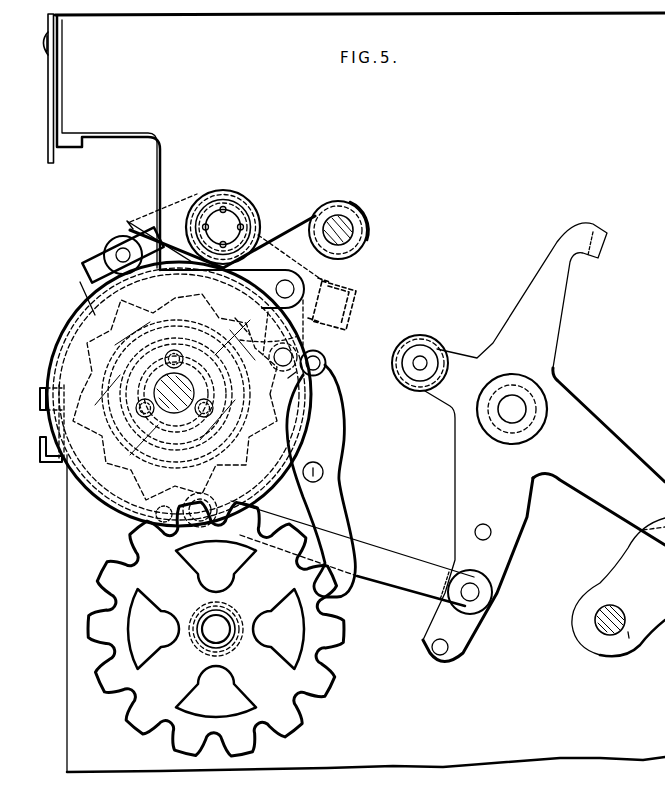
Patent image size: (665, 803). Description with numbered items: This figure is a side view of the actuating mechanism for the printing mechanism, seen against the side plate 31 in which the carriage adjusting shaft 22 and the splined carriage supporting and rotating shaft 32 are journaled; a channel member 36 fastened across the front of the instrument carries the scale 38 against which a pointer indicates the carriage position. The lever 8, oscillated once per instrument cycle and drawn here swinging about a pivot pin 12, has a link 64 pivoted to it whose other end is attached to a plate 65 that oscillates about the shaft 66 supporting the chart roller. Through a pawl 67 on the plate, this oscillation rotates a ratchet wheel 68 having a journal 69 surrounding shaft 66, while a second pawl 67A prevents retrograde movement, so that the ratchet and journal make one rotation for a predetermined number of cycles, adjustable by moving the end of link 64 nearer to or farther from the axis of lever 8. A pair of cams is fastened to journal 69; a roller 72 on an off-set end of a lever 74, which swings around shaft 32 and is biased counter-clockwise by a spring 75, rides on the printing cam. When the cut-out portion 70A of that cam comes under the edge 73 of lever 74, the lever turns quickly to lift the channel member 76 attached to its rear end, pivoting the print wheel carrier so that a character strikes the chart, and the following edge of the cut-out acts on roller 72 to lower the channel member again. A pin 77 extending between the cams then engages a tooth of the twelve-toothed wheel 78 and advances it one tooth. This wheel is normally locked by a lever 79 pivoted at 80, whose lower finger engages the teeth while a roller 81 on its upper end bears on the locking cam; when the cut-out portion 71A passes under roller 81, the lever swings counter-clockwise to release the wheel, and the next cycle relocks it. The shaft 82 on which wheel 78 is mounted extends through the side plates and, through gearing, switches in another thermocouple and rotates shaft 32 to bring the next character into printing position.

The lever 8 is at (611, 451).
The pivot pin 12 is at (604, 624).
The carriage adjusting shaft 22 is at (337, 222).
The side plate 31 is at (118, 143).
The carriage supporting and rotating shaft 32 is at (222, 222).
The channel member 36 is at (56, 66).
The scale 38 is at (48, 98).
The link 64 is at (398, 550).
The plate 65 is at (88, 498).
The shaft 66 is at (174, 393).
The pawl 67 is at (300, 334).
The second pawl 67A is at (274, 284).
The ratchet wheel 68 is at (52, 376).
The journal 69 is at (95, 465).
The cut-out portion 70A is at (179, 394).
The cut-out portion 71A is at (283, 400).
The roller 72 is at (112, 246).
The edge 73 is at (90, 264).
The lever 74 is at (153, 222).
The spring 75 is at (290, 217).
The channel member 76 is at (354, 294).
The pin 77 is at (160, 520).
The toothed wheel 78 is at (97, 660).
The lever 79 is at (332, 507).
The pivot 80 is at (313, 472).
The roller 81 is at (326, 358).
The shaft 82 is at (216, 633).